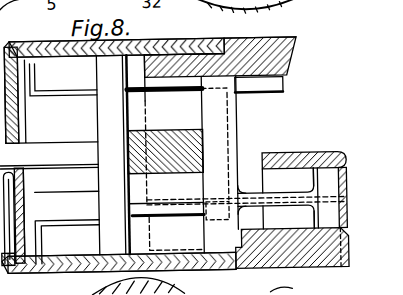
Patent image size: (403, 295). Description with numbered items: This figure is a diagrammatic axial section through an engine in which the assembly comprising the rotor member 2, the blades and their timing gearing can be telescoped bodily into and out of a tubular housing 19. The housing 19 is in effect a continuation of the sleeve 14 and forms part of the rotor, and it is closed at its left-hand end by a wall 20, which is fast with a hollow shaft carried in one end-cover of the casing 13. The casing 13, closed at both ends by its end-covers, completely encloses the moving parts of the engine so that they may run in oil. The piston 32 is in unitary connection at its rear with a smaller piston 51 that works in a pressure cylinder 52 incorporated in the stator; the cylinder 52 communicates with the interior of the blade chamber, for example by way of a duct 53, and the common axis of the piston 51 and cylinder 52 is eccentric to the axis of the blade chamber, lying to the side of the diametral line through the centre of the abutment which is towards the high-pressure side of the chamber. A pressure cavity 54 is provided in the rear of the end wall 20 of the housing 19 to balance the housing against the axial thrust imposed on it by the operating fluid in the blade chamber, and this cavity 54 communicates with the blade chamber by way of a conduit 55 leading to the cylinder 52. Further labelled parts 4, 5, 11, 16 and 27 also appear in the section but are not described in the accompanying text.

The rotor member 2 is at (172, 173).
The piston rod 4 is at (139, 109).
The valve member 5 is at (190, 235).
The cylinder 11 is at (196, 294).
The casing 13 is at (47, 41).
The sleeve 14 is at (124, 284).
The gland body 16 is at (188, 38).
The tubular housing 19 is at (62, 259).
The wall 20 is at (16, 100).
The spring 27 is at (73, 222).
The piston 32 is at (229, 133).
The smaller piston 51 is at (308, 177).
The pressure cylinder 52 is at (332, 177).
The duct 53 is at (255, 199).
The pressure cavity 54 is at (8, 194).
The conduit 55 is at (310, 270).